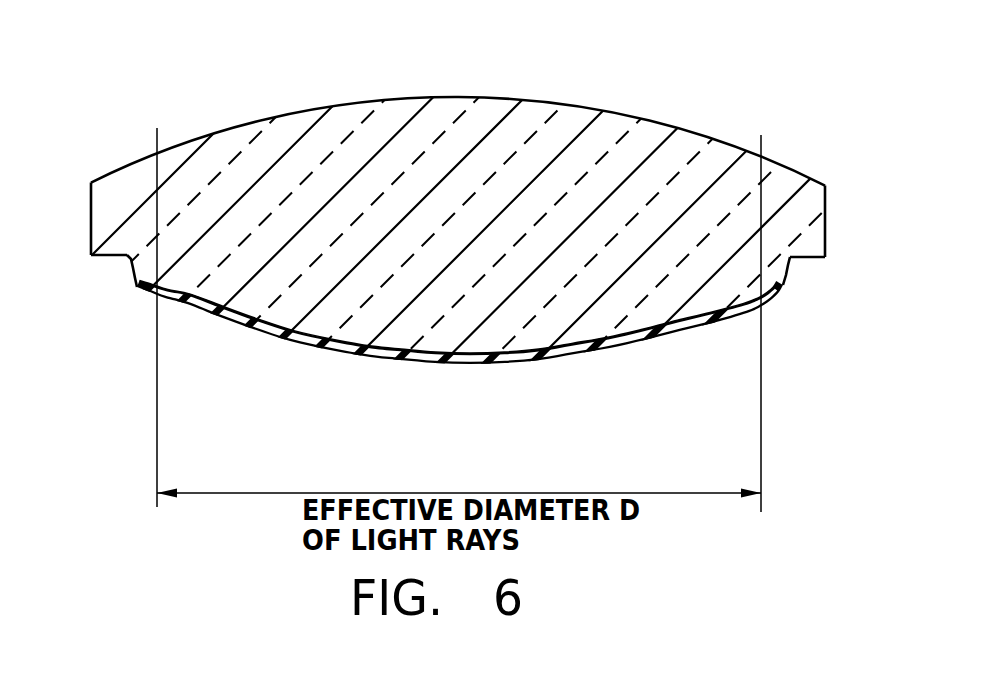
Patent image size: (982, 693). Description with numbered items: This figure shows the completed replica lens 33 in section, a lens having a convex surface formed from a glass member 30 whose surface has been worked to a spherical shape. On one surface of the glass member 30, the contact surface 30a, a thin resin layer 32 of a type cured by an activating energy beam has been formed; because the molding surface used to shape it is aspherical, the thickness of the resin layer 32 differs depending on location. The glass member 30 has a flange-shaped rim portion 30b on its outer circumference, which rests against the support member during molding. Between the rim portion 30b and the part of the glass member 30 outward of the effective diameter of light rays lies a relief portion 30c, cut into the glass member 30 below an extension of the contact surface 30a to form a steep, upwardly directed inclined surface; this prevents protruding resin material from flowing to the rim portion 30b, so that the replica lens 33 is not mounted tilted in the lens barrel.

The glass member 30 is at (707, 170).
The contact surface 30a is at (331, 347).
The rim portion 30b is at (807, 258).
The relief portion 30c is at (782, 291).
The resin layer 32 is at (655, 340).
The replica lens 33 is at (555, 97).